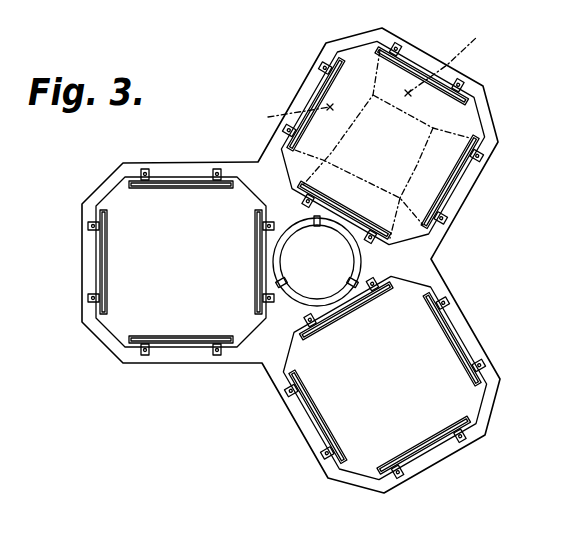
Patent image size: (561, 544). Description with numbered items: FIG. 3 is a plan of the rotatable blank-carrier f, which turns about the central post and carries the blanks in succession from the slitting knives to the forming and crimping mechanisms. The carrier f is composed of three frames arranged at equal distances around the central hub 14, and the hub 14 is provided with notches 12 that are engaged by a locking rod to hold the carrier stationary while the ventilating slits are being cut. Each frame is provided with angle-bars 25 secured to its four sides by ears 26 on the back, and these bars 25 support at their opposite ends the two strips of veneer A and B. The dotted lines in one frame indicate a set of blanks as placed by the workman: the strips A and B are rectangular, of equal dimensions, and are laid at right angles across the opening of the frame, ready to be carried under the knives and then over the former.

The notches 12 is at (319, 226).
The central hub 14 is at (364, 260).
The angle-bars 25 is at (451, 474).
The ears 26 is at (146, 171).
The strip A is at (246, 81).
The strip B is at (464, 37).
The rotatable carrier f is at (102, 339).